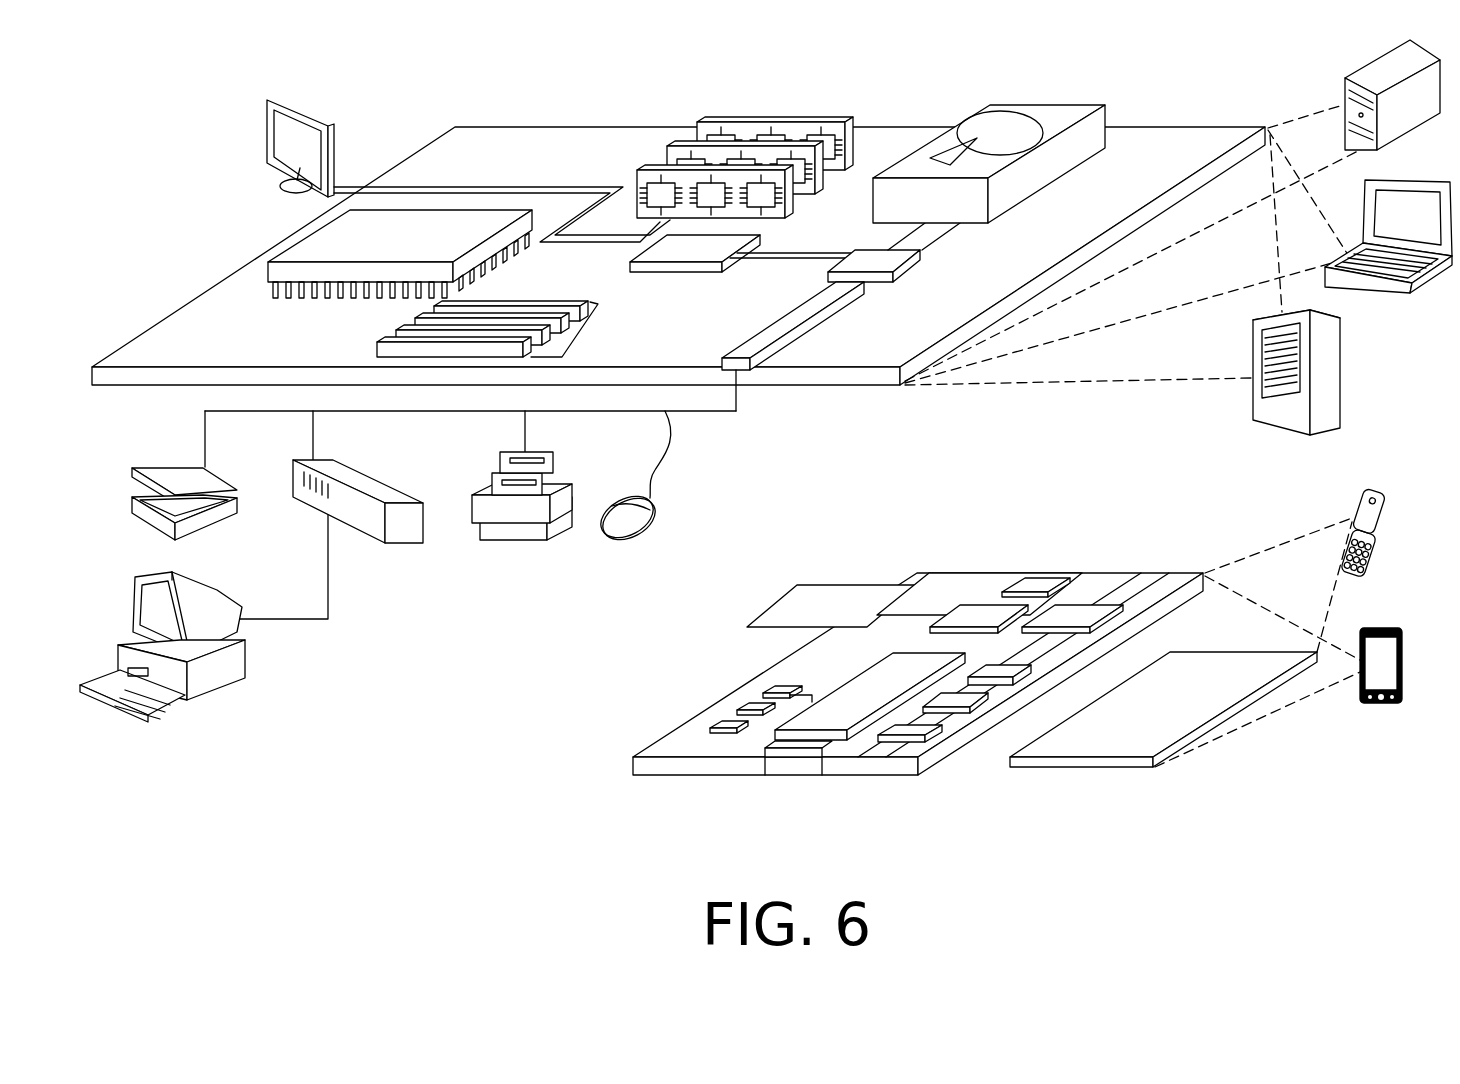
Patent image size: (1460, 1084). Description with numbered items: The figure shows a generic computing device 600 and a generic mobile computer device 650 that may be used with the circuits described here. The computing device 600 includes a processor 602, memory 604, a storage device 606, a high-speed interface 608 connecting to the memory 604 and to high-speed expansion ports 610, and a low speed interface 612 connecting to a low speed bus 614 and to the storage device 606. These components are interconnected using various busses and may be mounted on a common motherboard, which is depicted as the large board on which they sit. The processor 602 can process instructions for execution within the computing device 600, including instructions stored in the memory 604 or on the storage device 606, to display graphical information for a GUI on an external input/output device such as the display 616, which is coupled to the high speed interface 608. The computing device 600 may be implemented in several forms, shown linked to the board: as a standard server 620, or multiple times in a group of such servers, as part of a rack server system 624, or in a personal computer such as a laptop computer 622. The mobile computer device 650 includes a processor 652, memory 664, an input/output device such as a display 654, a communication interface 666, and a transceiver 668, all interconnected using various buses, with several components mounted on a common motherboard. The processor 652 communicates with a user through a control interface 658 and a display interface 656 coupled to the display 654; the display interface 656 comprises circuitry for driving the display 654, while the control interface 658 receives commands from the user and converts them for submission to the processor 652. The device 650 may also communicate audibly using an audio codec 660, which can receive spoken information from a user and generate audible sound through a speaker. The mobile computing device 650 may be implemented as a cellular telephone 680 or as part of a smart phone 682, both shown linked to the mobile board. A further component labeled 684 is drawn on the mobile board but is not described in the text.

The computing device 600 is at (405, 65).
The processor 602 is at (297, 250).
The memory 604 is at (790, 126).
The storage device 606 is at (1036, 106).
The high-speed interface 608 is at (712, 244).
The high-speed expansion ports 610 is at (408, 328).
The low speed interface 612 is at (868, 258).
The low speed bus 614 is at (745, 358).
The display 616 is at (270, 100).
The standard server 620 is at (1368, 74).
The laptop computer 622 is at (1427, 180).
The rack server system 624 is at (1343, 373).
The mobile computer device 650 is at (1032, 644).
The processor 652 is at (838, 702).
The display 654 is at (1203, 668).
The display interface 656 is at (902, 728).
The control interface 658 is at (950, 700).
The audio codec 660 is at (1005, 668).
The memory 664 is at (742, 708).
The communication interface 666 is at (985, 612).
The transceiver 668 is at (1080, 612).
The cellular telephone 680 is at (1034, 586).
The smart phone 682 is at (898, 588).
The battery 684 is at (808, 588).